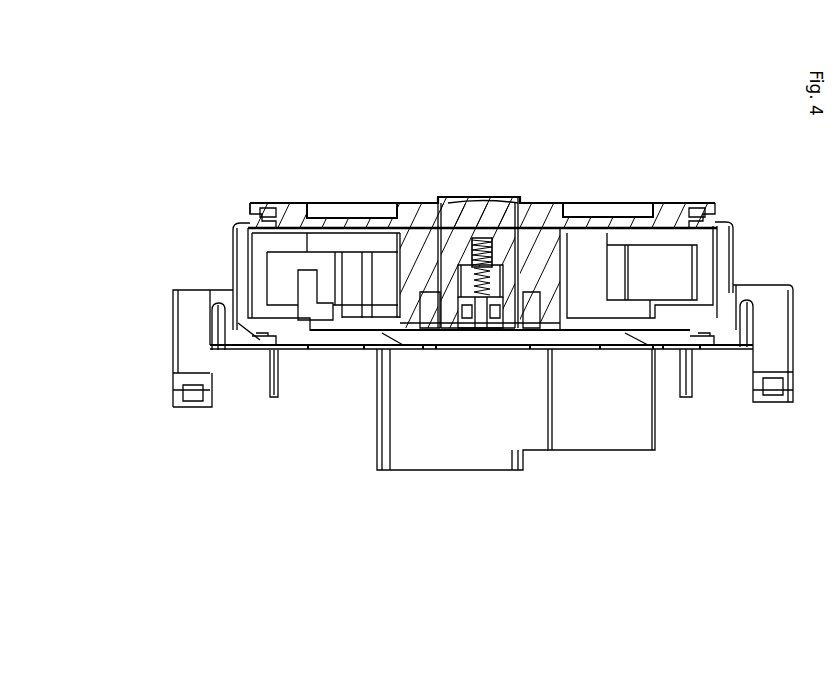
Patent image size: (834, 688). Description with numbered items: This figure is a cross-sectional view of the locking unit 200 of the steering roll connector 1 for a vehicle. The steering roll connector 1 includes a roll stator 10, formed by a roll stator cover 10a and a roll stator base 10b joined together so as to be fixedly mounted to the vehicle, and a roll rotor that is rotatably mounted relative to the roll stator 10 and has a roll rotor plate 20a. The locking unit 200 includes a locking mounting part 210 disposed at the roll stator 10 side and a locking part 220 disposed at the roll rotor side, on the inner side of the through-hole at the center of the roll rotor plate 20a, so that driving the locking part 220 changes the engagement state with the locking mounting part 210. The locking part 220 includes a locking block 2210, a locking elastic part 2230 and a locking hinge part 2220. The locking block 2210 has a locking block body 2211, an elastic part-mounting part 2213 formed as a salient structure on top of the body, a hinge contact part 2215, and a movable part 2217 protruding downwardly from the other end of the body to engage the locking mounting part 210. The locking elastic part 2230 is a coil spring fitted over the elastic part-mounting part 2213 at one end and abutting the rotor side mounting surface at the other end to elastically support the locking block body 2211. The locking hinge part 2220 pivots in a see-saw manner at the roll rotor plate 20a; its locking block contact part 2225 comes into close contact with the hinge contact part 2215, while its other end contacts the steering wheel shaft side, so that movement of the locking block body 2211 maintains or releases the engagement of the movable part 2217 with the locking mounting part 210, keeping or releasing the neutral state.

The steering roll connector 1 is at (372, 150).
The roll stator 10 is at (232, 440).
The roll stator cover 10a is at (245, 323).
The roll stator base 10b is at (192, 357).
The roll rotor plate 20a is at (250, 208).
The locking unit 200 is at (480, 273).
The locking mounting part 210 is at (618, 112).
The locking part 220 is at (620, 145).
The locking block 2210 is at (480, 229).
The locking block body 2211 is at (497, 280).
The elastic part-mounting part 2213 is at (492, 262).
The hinge contact part 2215 is at (500, 302).
The movable part 2217 is at (510, 305).
The locking hinge part 2220 is at (567, 142).
The locking block contact part 2225 is at (457, 303).
The locking elastic part 2230 is at (488, 238).